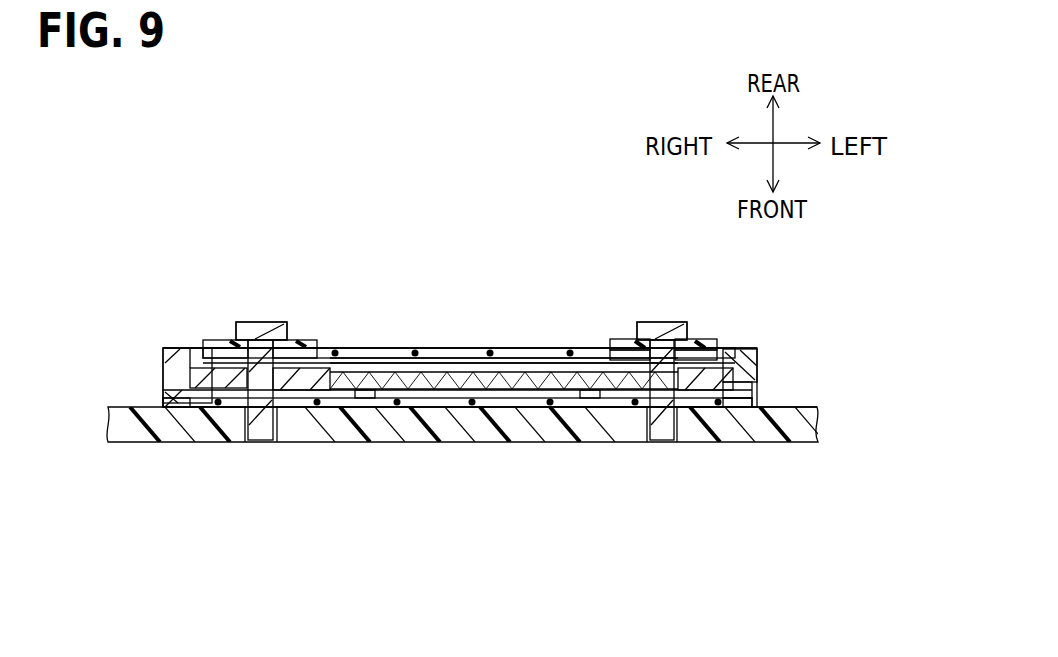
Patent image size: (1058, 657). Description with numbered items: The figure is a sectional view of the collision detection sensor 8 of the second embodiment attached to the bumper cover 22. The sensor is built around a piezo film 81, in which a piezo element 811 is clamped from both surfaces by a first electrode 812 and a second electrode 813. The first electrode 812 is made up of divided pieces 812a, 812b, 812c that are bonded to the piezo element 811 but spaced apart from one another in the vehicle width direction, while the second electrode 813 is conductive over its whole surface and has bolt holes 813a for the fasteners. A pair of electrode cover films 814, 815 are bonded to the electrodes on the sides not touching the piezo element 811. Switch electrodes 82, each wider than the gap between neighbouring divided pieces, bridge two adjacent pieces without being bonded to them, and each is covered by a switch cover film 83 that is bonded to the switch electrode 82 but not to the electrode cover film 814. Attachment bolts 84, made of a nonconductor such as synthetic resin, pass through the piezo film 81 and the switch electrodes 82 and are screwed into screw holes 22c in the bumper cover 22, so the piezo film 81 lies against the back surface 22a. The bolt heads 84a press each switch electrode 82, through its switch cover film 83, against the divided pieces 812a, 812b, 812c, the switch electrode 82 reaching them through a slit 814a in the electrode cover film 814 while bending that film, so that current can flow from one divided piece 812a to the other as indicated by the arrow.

The collision detection sensor 8 is at (574, 351).
The bumper cover 22 is at (112, 442).
The back surface 22a is at (815, 402).
The screw hole 22c is at (249, 440).
The piezo film 81 is at (334, 352).
The piezo element 811 is at (365, 352).
The first electrode 812 is at (500, 376).
The divided piece 812a is at (757, 362).
The divided piece 812b is at (450, 352).
The divided piece 812c is at (197, 357).
The second electrode 813 is at (375, 400).
The bolt hole 813a is at (190, 415).
The electrode cover film 814 is at (527, 352).
The slit 814a is at (365, 398).
The electrode cover film 815 is at (190, 377).
The switch electrode 82 is at (297, 352).
The switch cover film 83 is at (213, 342).
The attachment bolt 84 is at (260, 441).
The bolt head 84a is at (270, 323).